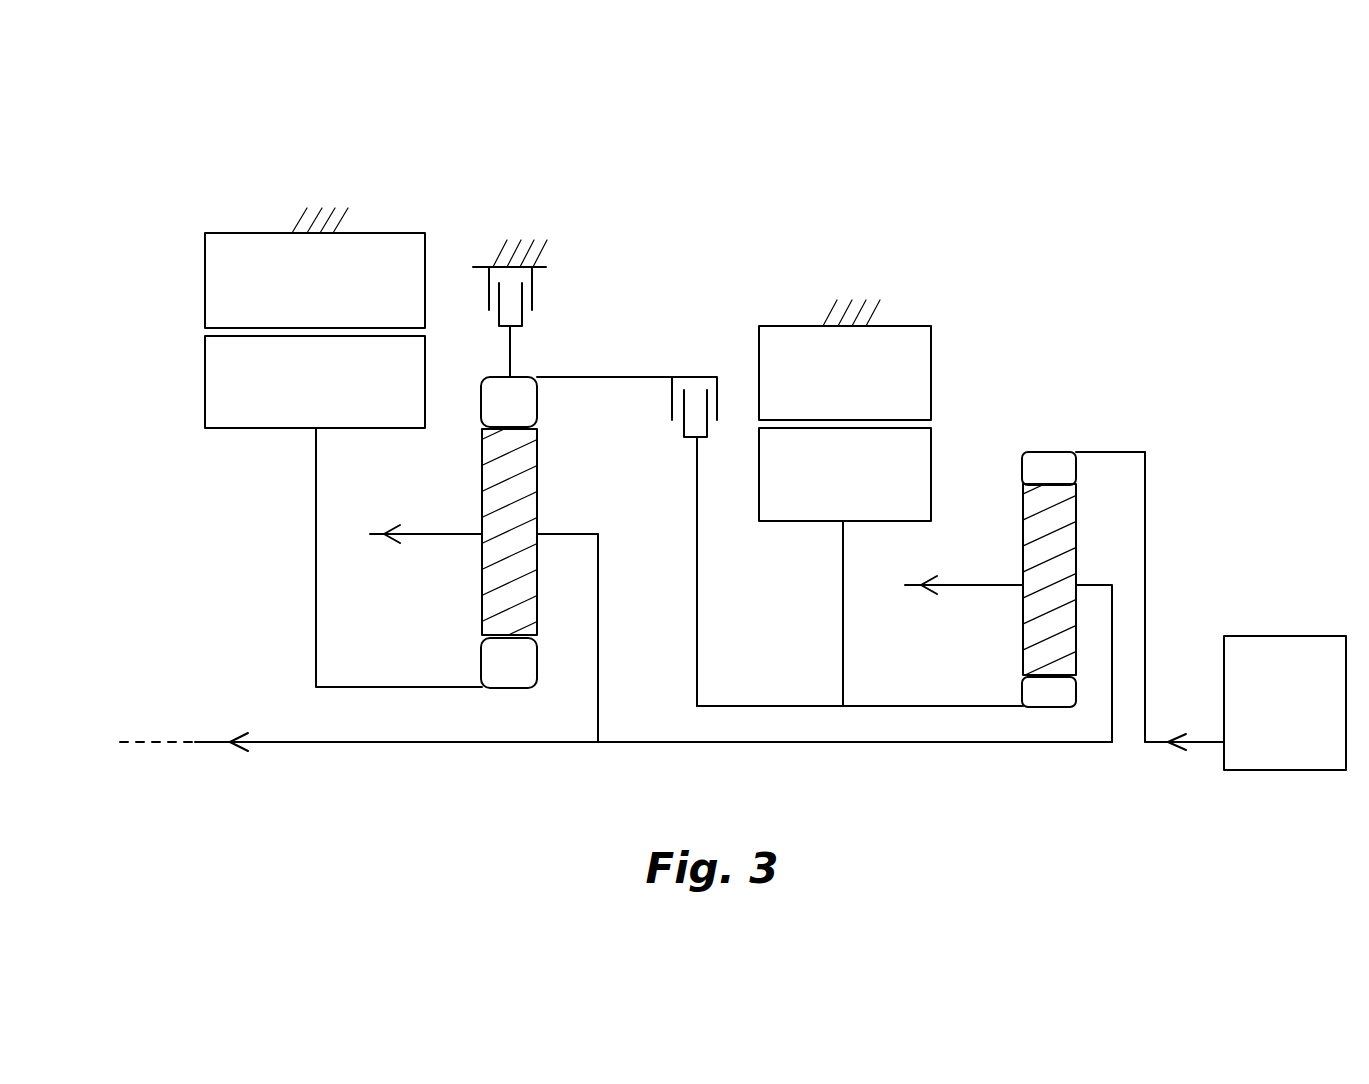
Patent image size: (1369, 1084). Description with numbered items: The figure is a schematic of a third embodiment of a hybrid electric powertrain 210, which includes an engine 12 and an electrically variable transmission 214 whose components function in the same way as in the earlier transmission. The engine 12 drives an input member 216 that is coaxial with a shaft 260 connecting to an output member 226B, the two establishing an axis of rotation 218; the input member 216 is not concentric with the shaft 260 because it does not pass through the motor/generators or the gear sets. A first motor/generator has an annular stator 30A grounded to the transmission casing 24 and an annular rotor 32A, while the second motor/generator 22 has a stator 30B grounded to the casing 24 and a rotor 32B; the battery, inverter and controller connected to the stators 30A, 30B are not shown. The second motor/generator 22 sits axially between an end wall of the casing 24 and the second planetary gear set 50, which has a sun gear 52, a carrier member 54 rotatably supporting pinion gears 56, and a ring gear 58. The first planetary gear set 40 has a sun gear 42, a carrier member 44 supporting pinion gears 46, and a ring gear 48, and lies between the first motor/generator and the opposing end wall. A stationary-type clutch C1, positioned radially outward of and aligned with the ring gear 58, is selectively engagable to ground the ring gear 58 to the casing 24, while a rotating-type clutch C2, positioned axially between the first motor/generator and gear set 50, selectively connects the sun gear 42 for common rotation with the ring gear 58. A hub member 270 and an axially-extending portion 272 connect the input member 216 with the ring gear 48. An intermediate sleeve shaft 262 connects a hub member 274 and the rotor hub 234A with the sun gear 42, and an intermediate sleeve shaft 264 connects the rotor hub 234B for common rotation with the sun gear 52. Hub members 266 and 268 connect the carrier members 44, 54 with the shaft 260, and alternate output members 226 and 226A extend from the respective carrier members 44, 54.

The electrically variable transmission 214 is at (178, 217).
The hybrid electric powertrain 210 is at (970, 256).
The second motor/generator 22 is at (197, 391).
The transmission casing 24 is at (296, 233).
The annular stator 30B is at (315, 280).
The annular rotor 32B is at (315, 382).
The annular stator 30A is at (845, 373).
The annular rotor 32A is at (845, 474).
The engine 12 is at (1285, 703).
The stationary-type clutch C1 is at (552, 307).
The rotating-type clutch C2 is at (718, 438).
The second planetary gear set 50 is at (466, 573).
The sun gear 52 is at (481, 667).
The carrier member 54 is at (560, 534).
The pinion gears 56 is at (537, 452).
The ring gear 58 is at (481, 398).
The first planetary gear set 40 is at (961, 632).
The sun gear 42 is at (1022, 690).
The carrier member 44 is at (1100, 585).
The pinion gears 46 is at (1022, 505).
The ring gear 48 is at (1022, 468).
The alternate output member 226 is at (975, 585).
The alternate output member 226A is at (440, 534).
The output member 226B is at (345, 743).
The rotor hub 234A is at (843, 550).
The rotor hub 234B is at (316, 505).
The input member 216 is at (1196, 745).
The axis of rotation 218 is at (165, 745).
The shaft 260 is at (680, 743).
The intermediate sleeve shaft 262 is at (755, 706).
The intermediate sleeve shaft 264 is at (356, 686).
The hub member 266 is at (1112, 680).
The hub member 268 is at (598, 684).
The hub member 270 is at (1145, 525).
The axially-extending portion 272 is at (1110, 452).
The hub member 274 is at (697, 595).